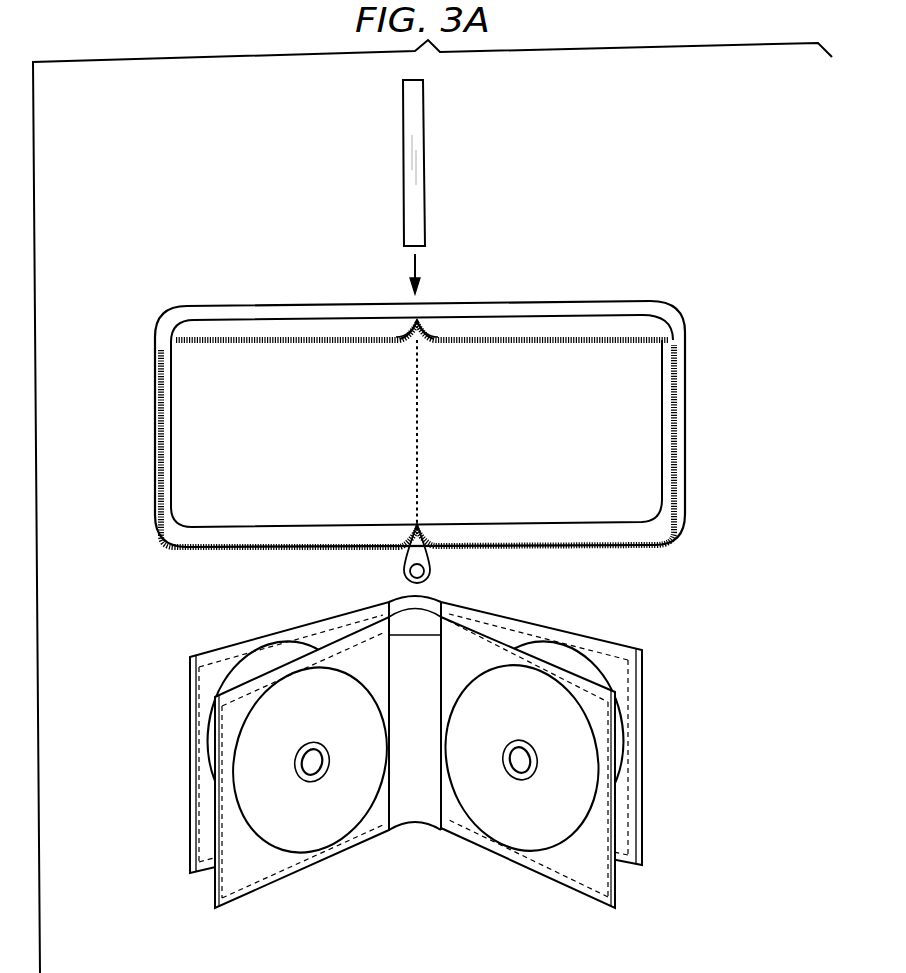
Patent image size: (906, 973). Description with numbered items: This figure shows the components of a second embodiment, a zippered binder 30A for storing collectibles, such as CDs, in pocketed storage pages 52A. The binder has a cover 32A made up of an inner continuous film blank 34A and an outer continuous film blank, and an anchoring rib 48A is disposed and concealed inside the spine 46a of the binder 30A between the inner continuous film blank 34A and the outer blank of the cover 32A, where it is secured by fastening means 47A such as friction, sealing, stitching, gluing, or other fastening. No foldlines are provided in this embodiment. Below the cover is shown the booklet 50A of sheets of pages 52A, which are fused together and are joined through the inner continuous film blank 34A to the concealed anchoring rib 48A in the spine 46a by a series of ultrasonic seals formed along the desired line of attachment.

The zippered binder 30A is at (690, 307).
The cover 32A is at (693, 410).
The inner continuous film blank 34A is at (647, 478).
The spine 46a is at (416, 366).
The fastening means 47A is at (420, 452).
The anchoring rib 48A is at (425, 160).
The booklet 50A is at (326, 866).
The pocketed storage pages 52A is at (628, 810).